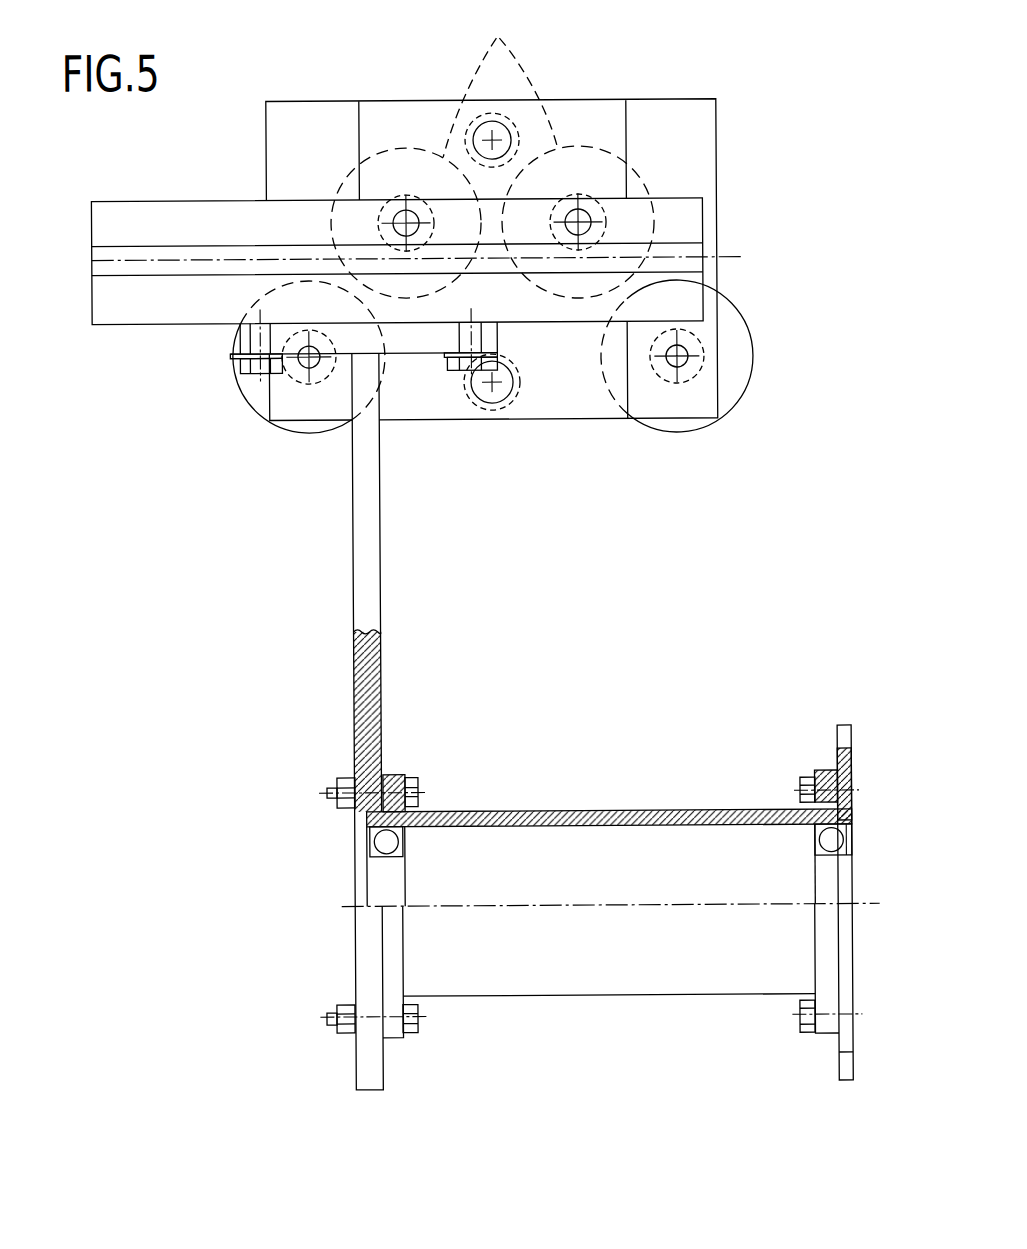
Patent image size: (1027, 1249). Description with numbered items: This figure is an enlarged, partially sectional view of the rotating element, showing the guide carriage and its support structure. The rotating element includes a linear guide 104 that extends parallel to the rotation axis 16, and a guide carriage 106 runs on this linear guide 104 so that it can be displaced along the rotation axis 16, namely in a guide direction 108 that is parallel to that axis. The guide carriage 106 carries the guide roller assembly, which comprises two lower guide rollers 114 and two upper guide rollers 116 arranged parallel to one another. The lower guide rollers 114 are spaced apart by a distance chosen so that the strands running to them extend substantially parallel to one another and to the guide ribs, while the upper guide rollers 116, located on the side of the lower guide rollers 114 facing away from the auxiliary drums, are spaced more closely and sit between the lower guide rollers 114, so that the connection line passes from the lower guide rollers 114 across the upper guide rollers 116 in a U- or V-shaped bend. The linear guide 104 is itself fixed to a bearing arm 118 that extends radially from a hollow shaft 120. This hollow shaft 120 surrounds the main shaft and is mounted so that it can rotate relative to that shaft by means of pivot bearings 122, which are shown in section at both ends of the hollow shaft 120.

The rotation axis 16 is at (495, 906).
The linear guide 104 is at (691, 225).
The guide carriage 106 is at (703, 123).
The guide direction 108 is at (720, 250).
The lower guide rollers 114 is at (298, 431).
The upper guide rollers 116 is at (500, 38).
The bearing arm 118 is at (365, 592).
The hollow shaft 120 is at (566, 812).
The pivot bearings 122 is at (848, 854).